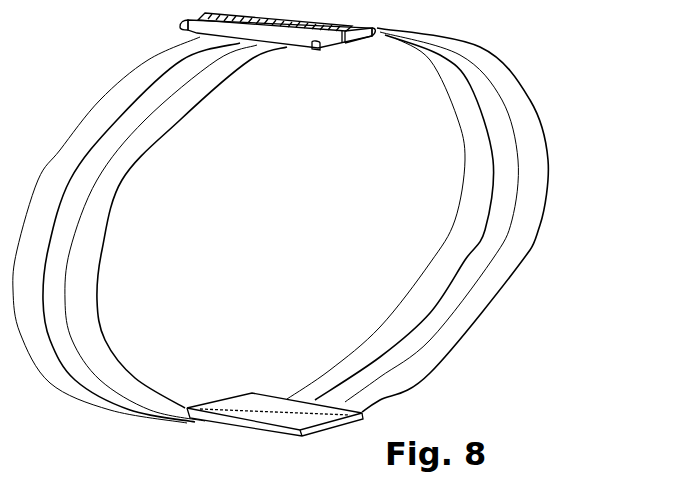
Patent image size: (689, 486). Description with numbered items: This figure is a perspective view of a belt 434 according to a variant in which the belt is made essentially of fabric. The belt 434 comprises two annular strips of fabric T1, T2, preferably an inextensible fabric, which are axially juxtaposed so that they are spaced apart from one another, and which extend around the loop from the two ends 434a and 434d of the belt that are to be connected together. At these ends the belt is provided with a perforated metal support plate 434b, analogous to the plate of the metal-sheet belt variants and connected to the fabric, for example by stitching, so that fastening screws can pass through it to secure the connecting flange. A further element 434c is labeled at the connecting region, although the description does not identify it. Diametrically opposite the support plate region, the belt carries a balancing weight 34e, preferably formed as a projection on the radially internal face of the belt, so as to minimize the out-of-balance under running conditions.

The belt 434 is at (299, 225).
The annular strip of fabric T1 is at (75, 134).
The annular strip of fabric T2 is at (135, 172).
The end of the belt 434a is at (320, 52).
The perforated metal support plate 434b is at (368, 41).
The clasp divider 434c is at (344, 45).
The end of the belt 434d is at (200, 20).
The balancing weight 34e is at (267, 393).